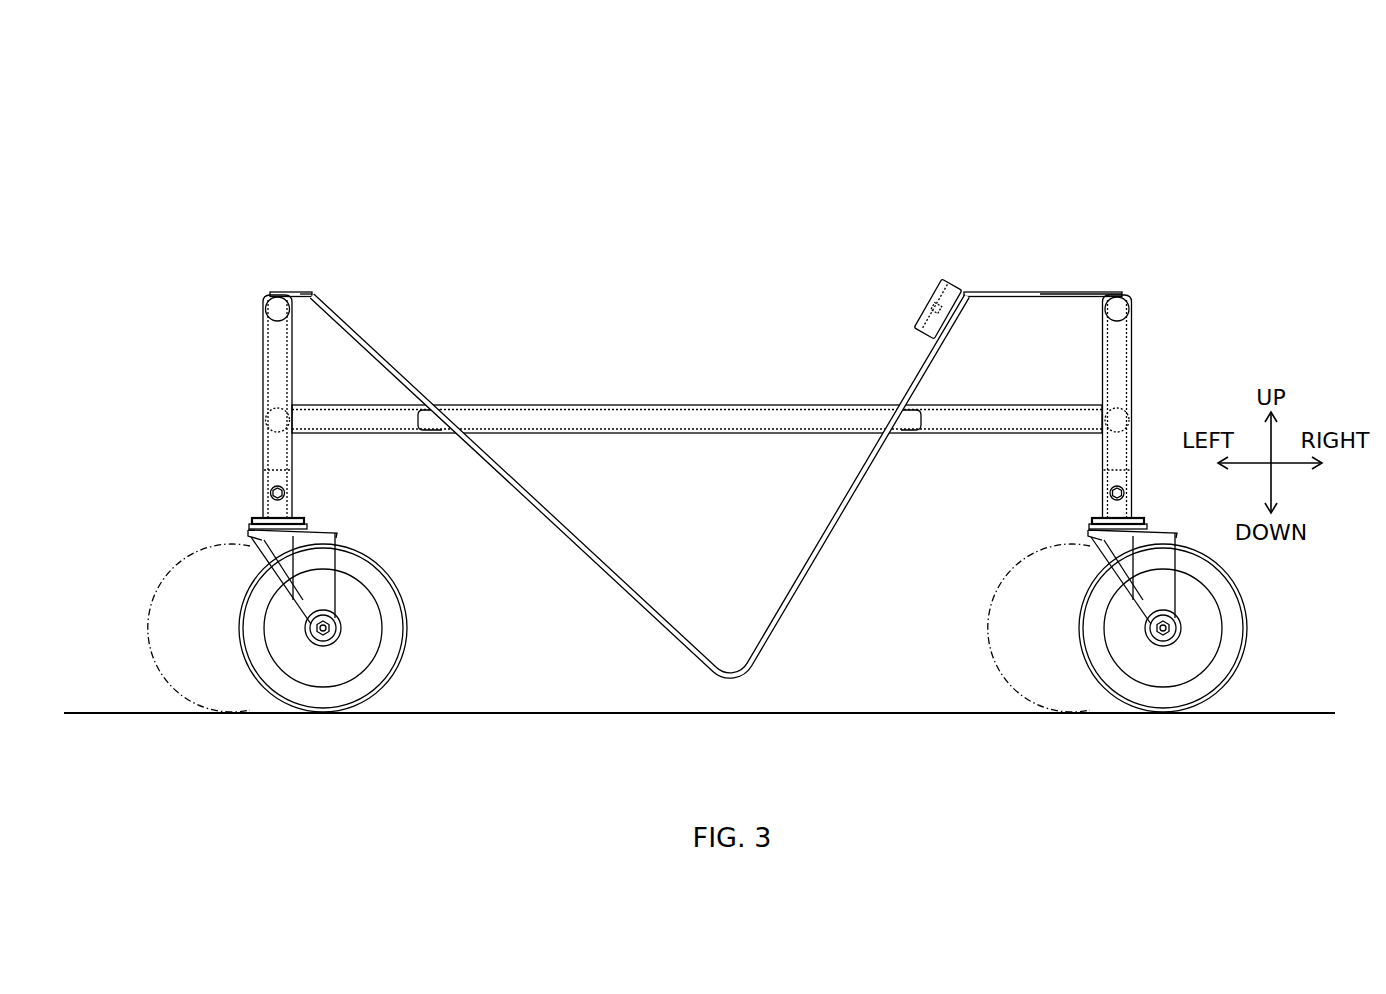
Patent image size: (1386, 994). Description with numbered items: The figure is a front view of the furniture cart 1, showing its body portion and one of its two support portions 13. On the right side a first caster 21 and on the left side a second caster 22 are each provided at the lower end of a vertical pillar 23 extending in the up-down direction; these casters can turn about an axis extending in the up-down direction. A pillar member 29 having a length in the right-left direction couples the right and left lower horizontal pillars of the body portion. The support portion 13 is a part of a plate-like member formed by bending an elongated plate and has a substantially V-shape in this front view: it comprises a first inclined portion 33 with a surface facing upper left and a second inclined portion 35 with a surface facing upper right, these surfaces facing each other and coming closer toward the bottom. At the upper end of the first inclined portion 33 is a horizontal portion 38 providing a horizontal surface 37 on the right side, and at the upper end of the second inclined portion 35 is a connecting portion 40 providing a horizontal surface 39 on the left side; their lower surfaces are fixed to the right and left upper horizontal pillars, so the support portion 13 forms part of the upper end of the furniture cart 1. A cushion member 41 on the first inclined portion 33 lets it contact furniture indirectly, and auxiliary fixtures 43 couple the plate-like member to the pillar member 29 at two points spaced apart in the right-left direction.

The furniture cart 1 is at (1177, 181).
The support portion 13 is at (639, 486).
The first caster 21 is at (1230, 635).
The second caster 22 is at (398, 637).
The vertical pillar 23 is at (273, 363).
The pillar member 29 is at (684, 412).
The first inclined portion 33 is at (838, 517).
The second inclined portion 35 is at (567, 527).
The horizontal surface 37 is at (1010, 292).
The horizontal portion 38 is at (1055, 292).
The horizontal surface 39 is at (293, 291).
The connecting portion 40 is at (309, 292).
The cushion member 41 is at (938, 300).
The auxiliary fixture 43 is at (433, 441).